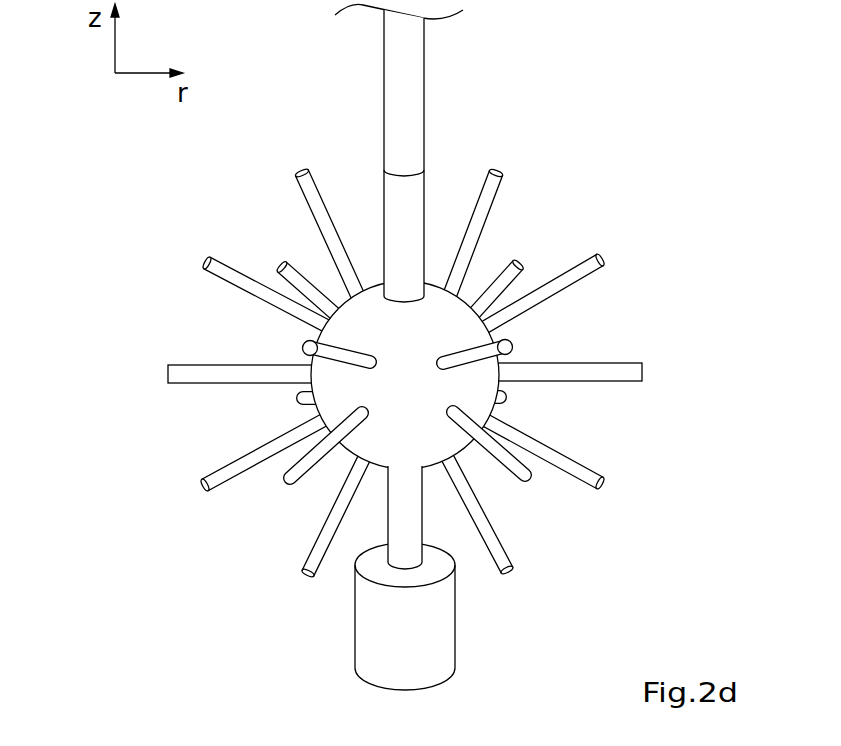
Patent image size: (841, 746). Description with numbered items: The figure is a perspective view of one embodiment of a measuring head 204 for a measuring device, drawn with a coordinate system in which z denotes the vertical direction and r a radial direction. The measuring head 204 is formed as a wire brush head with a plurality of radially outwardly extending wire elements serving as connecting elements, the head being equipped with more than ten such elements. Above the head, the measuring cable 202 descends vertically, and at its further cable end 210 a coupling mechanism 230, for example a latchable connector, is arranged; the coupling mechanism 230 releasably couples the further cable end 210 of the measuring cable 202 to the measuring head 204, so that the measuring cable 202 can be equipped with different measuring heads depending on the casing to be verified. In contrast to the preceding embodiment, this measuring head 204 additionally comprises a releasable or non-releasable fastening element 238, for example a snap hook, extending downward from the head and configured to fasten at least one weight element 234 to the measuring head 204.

The measuring cable 202 is at (421, 153).
The further cable end 210 is at (364, 128).
The coupling mechanism 230 is at (407, 235).
The measuring head 204 is at (634, 308).
The fastening element 238 is at (407, 506).
The weight element 234 is at (432, 635).